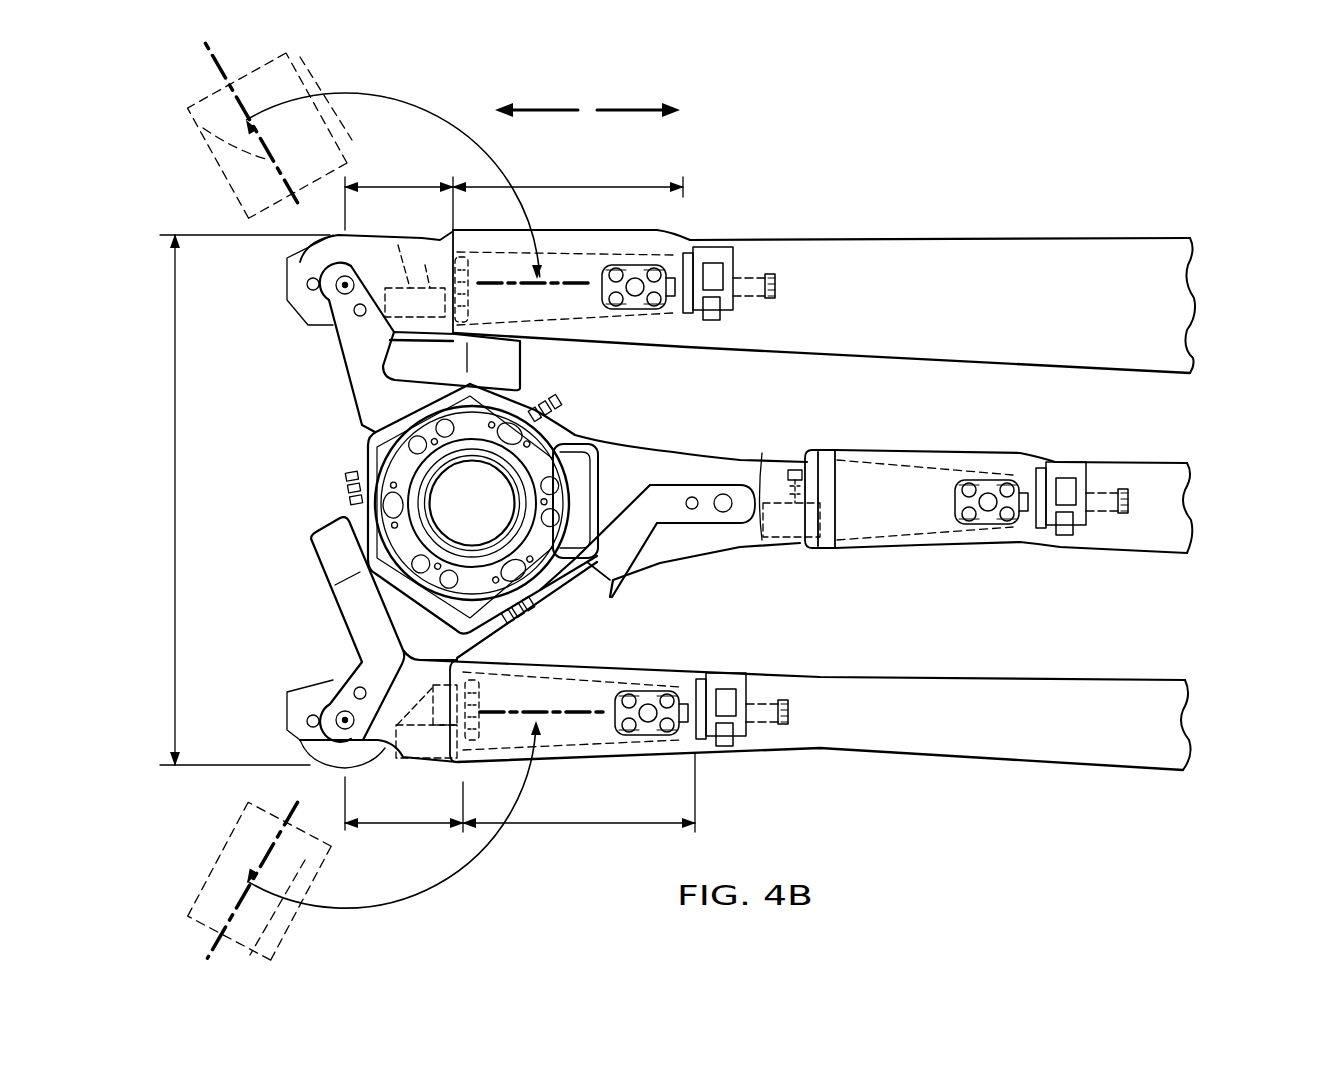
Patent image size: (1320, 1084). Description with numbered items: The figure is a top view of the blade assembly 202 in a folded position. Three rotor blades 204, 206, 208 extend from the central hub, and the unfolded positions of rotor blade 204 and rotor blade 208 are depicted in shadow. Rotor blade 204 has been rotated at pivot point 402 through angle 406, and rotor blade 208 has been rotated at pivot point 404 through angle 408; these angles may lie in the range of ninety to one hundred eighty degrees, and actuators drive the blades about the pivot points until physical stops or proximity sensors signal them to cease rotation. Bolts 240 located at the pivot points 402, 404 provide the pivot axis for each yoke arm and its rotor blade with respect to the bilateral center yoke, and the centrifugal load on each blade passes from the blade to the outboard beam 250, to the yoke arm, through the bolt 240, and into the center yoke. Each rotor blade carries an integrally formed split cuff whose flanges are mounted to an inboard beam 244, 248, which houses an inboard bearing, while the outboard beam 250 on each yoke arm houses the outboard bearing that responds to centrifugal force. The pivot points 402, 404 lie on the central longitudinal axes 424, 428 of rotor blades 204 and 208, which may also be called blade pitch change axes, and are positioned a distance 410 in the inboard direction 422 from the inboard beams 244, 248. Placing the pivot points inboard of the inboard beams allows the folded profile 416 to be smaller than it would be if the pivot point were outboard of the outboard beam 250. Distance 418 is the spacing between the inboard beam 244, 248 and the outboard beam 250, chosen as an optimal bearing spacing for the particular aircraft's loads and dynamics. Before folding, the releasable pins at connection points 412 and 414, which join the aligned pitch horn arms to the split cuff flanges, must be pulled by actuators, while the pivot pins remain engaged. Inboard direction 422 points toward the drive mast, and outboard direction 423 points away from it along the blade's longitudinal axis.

The blade assembly 202 is at (1250, 125).
The rotor blade 204 is at (200, 141).
The rotor blade 206 is at (948, 447).
The rotor blade 208 is at (212, 870).
The bolt 240 is at (343, 293).
The inboard beam 244 is at (398, 250).
The inboard beam 248 is at (430, 758).
The outboard beam 250 is at (735, 317).
The pivot point 402 is at (350, 300).
The pivot point 404 is at (343, 708).
The angle 406 is at (430, 113).
The angle 408 is at (447, 883).
The distance 410 is at (398, 187).
The connection point 412 is at (311, 284).
The connection point 414 is at (311, 722).
The folded profile 416 is at (172, 490).
The distance 418 is at (566, 187).
The inboard direction 422 is at (545, 110).
The outboard direction 423 is at (628, 110).
The central longitudinal axis 424 is at (588, 290).
The central longitudinal axis 428 is at (590, 716).